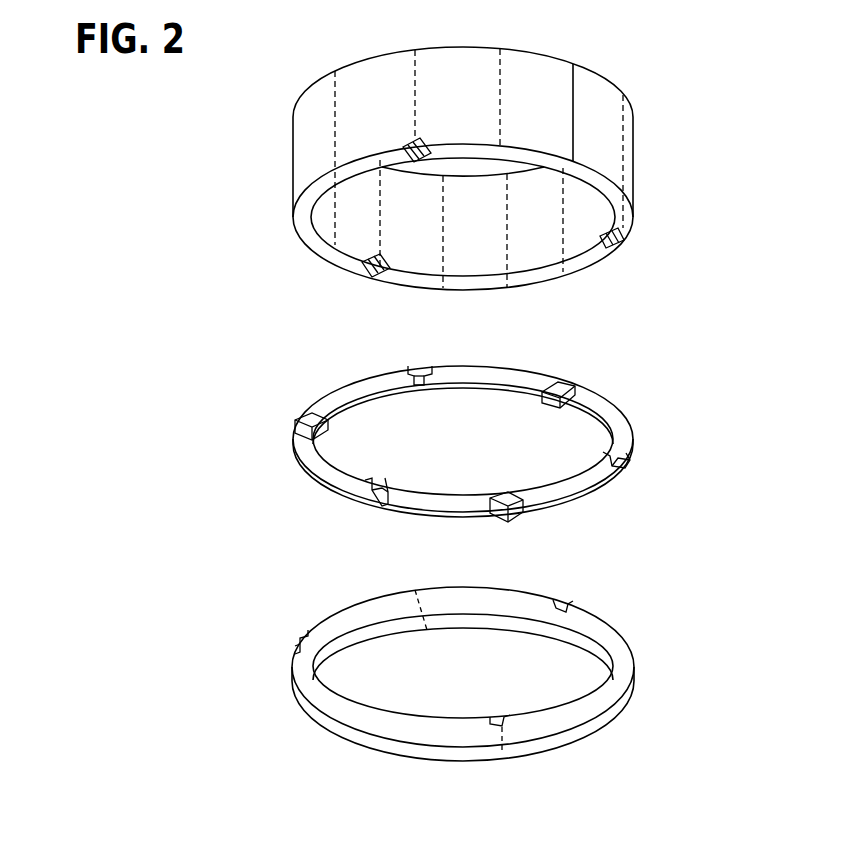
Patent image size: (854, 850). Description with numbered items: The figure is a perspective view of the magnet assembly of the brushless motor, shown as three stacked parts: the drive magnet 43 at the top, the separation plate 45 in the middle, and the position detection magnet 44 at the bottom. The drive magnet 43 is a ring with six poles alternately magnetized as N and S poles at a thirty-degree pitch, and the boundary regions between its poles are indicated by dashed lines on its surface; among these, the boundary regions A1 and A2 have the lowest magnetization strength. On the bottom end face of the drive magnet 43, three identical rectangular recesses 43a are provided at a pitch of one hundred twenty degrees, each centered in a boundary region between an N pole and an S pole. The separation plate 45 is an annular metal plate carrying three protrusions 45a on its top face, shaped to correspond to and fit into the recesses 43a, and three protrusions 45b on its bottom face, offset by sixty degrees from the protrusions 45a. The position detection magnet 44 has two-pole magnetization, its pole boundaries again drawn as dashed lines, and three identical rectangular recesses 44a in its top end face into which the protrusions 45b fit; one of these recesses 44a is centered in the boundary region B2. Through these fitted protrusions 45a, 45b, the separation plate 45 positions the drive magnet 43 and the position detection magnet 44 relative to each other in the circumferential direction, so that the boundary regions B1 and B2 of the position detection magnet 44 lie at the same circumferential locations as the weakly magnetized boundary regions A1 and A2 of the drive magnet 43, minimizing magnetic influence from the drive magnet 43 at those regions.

The drive magnet 43 is at (598, 92).
The rectangular recesses 43a is at (408, 142).
The position detection magnet 44 is at (605, 630).
The rectangular recesses 44a is at (565, 600).
The separation plate 45 is at (605, 392).
The protrusions 45a is at (410, 365).
The protrusions 45b is at (553, 403).
The boundary region A1 is at (413, 100).
The boundary region A2 is at (503, 233).
The boundary region B1 is at (415, 600).
The boundary region B2 is at (497, 733).